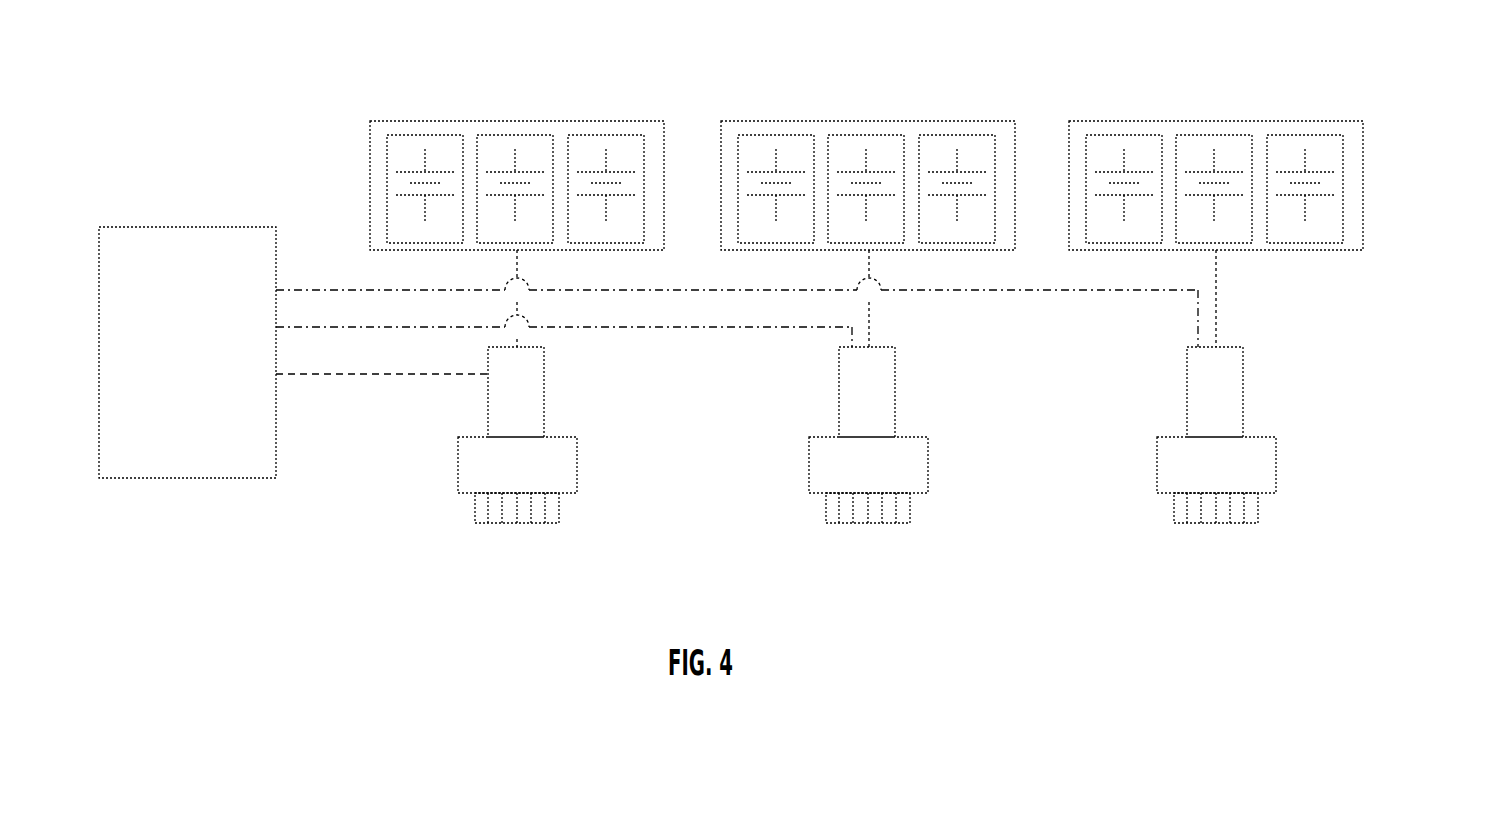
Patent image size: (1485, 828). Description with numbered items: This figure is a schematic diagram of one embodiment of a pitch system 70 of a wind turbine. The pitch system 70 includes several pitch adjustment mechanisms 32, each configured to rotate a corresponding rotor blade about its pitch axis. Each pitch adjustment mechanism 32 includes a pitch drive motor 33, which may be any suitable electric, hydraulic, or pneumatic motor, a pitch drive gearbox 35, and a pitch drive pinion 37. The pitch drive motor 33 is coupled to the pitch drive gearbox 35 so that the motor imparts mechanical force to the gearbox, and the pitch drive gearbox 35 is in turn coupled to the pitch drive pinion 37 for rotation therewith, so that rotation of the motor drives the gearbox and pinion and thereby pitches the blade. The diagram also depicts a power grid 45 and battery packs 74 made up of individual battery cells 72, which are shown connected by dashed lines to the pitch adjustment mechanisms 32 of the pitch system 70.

The pitch adjustment mechanism 32 is at (875, 441).
The pitch drive motor 33 is at (488, 403).
The pitch drive gearbox 35 is at (458, 463).
The pitch drive pinion 37 is at (478, 512).
The power grid 45 is at (178, 391).
The pitch system 70 is at (1436, 227).
The battery cell 72 is at (495, 147).
The battery pack 74 is at (531, 121).